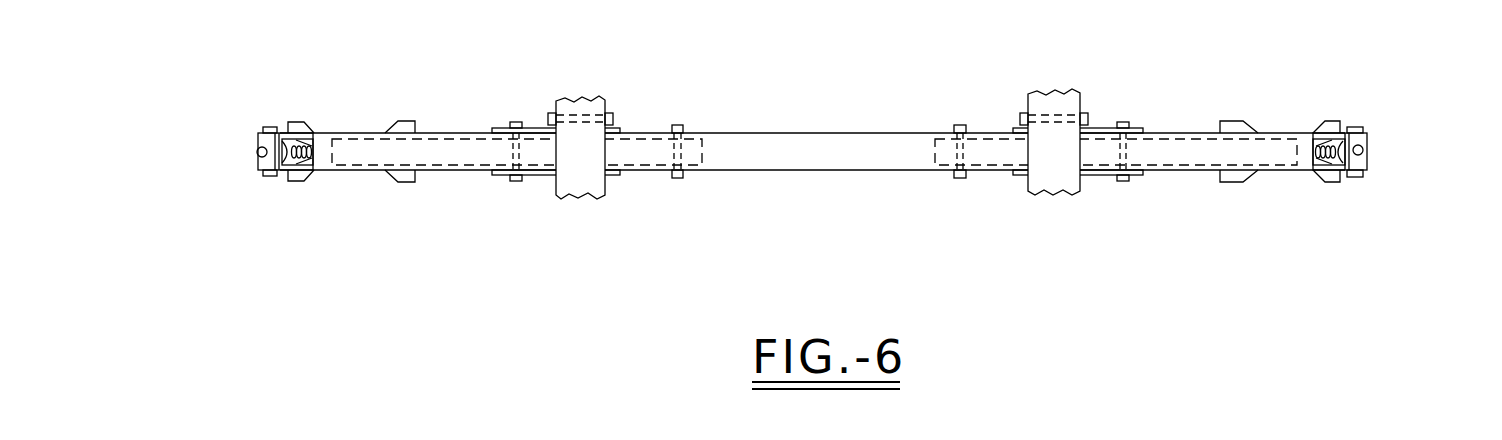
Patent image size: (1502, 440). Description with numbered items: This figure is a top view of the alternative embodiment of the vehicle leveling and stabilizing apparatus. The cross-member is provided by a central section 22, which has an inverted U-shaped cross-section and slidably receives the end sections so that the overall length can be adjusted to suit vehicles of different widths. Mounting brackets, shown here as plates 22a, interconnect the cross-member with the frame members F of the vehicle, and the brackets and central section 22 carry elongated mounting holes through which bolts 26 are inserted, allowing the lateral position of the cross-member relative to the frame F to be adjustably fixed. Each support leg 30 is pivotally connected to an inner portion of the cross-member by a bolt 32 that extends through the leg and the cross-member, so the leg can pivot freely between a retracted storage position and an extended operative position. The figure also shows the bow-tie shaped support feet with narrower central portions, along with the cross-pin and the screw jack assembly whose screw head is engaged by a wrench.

The central section 22 is at (848, 132).
The mounting plate 22a is at (537, 128).
The bolt 26 is at (515, 121).
The support leg 30 is at (361, 172).
The bolt 32 is at (677, 180).
The frame F is at (590, 185).